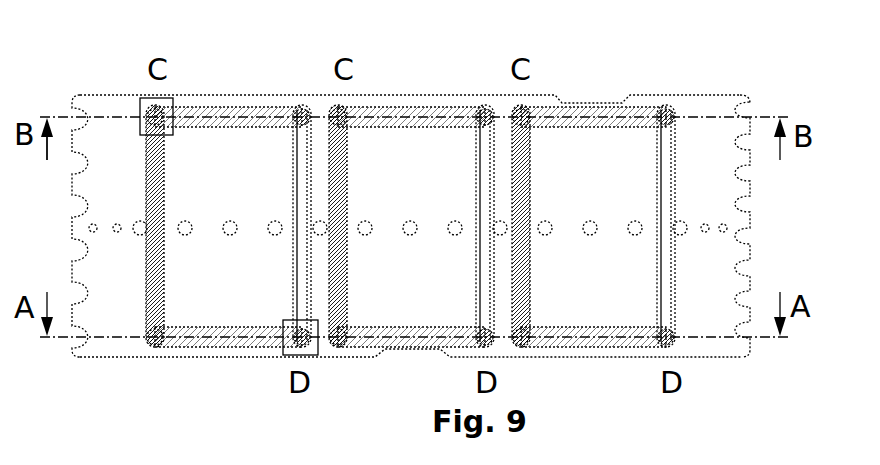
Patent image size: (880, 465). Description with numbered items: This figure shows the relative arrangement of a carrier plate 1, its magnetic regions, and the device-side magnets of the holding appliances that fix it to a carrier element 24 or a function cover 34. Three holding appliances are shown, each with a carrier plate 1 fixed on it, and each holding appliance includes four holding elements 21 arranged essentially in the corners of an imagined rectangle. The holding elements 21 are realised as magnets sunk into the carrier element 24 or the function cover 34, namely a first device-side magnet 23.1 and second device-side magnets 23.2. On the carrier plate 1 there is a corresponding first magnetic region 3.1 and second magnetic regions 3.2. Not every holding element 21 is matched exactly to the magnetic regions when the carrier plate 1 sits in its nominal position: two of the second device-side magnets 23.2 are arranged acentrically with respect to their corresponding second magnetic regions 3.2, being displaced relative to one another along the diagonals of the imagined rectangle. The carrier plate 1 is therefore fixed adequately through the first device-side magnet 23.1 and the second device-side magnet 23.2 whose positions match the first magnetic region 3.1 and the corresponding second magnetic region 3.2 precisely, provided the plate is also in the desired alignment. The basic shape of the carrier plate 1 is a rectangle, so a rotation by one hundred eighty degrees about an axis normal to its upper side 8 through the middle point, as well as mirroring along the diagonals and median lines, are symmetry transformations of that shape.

The carrier plate 1 is at (438, 76).
The first magnetic region 3.1 is at (150, 344).
The second magnetic region 3.2 is at (150, 108).
The first device-side magnet 23.1 is at (202, 374).
The second device-side magnet 23.2 is at (152, 112).
The holding element 21 is at (531, 98).
The carrier element 24 is at (713, 183).
The function cover 34 is at (457, 238).
The upper side 8 is at (578, 277).